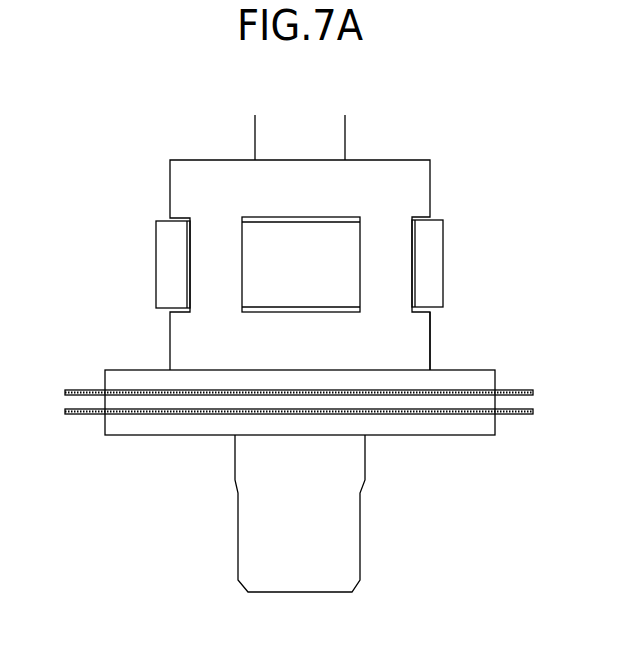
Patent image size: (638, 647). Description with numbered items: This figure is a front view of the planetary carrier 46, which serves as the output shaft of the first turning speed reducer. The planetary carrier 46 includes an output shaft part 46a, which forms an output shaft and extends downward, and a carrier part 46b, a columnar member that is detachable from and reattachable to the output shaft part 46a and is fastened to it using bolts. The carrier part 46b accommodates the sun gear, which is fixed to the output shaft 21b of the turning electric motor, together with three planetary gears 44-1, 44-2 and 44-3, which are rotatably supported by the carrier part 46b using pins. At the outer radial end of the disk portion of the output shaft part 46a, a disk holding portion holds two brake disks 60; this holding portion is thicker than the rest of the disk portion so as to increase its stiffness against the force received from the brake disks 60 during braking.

The output shaft of the turning electric motor 21b is at (265, 143).
The planetary gear 44-1 is at (157, 262).
The planetary gear 44-2 is at (262, 257).
The planetary gear 44-3 is at (430, 258).
The planetary carrier 46 is at (163, 340).
The output shaft part 46a is at (360, 525).
The carrier part 46b is at (430, 333).
The brake disks 60 is at (65, 393).